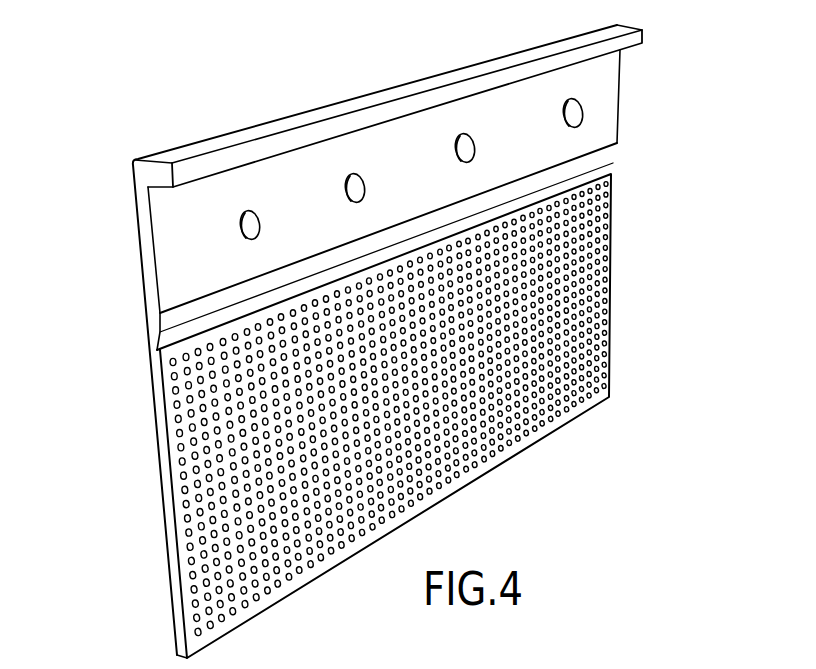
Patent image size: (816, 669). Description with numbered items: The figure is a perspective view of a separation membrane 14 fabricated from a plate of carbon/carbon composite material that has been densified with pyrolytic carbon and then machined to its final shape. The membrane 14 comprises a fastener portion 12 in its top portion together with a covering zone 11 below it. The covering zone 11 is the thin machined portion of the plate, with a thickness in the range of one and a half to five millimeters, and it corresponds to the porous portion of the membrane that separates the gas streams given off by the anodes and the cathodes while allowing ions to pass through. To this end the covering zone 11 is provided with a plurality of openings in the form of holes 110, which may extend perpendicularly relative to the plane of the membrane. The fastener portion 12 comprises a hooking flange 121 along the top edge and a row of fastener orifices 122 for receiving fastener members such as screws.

The membrane 14 is at (377, 341).
The covering zone 11 is at (376, 416).
The holes 110 is at (547, 416).
The fastener portion 12 is at (420, 187).
The hooking flange 121 is at (644, 36).
The fastener orifices 122 is at (579, 127).